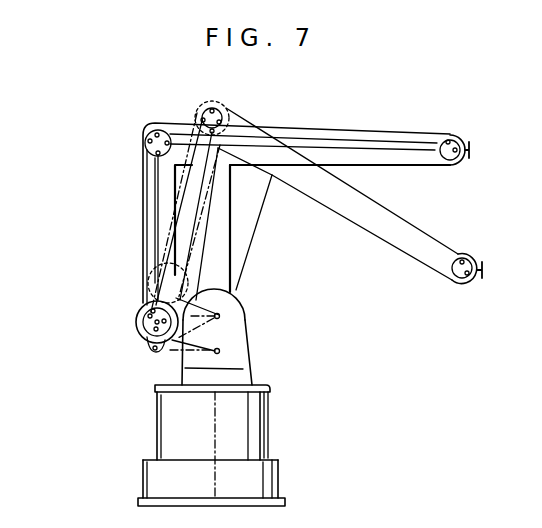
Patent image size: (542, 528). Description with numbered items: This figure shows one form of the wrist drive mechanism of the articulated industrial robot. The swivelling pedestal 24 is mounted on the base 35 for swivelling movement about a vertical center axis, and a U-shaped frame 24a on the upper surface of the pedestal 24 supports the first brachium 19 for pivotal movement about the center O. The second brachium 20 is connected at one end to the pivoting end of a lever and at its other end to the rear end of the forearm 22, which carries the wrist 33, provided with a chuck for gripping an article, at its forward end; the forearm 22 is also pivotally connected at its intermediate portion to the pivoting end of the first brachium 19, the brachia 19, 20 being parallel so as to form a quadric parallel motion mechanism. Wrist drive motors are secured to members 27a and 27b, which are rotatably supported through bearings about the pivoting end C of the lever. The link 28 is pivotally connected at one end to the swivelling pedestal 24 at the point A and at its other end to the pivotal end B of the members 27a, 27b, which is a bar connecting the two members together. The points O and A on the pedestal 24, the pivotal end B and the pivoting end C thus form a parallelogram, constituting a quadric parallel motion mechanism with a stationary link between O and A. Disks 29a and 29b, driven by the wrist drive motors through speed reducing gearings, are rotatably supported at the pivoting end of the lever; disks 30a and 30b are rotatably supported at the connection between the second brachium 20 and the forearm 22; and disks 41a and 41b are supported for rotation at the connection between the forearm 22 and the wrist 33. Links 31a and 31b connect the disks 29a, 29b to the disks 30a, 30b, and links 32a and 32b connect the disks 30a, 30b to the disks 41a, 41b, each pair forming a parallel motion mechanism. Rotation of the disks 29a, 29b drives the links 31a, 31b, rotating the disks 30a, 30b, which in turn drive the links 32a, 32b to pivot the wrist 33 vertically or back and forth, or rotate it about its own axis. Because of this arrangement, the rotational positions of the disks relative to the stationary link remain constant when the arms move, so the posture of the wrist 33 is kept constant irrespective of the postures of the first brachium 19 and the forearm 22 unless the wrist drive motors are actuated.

The first brachium 19 is at (232, 237).
The second brachium 20 is at (145, 224).
The forearm 22 is at (410, 166).
The swivelling pedestal 24 is at (265, 420).
The U-shaped frame 24a is at (240, 341).
The member 27a is at (96, 351).
The member 27b is at (146, 343).
The link 28 is at (168, 355).
The disk 29a is at (114, 303).
The disk 29b is at (145, 311).
The disk 30a is at (151, 122).
The disk 30b is at (150, 128).
The link 31a is at (125, 212).
The link 31b is at (157, 184).
The link 32a is at (312, 119).
The link 32b is at (356, 146).
The wrist 33 is at (473, 148).
The base 35 is at (272, 485).
The disk 41a is at (382, 196).
The disk 41b is at (451, 160).
The point A is at (220, 352).
The pivotal end B is at (152, 351).
The pivoting end C is at (137, 332).
The center O is at (221, 316).